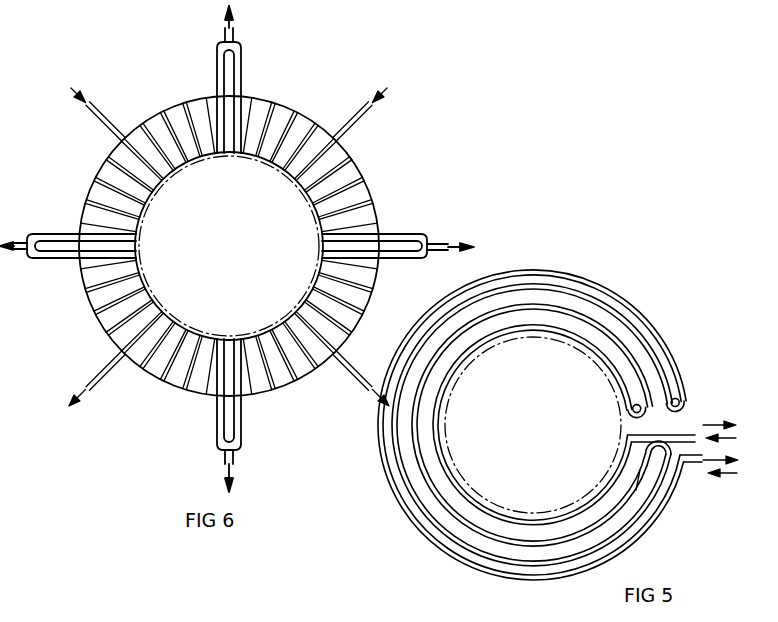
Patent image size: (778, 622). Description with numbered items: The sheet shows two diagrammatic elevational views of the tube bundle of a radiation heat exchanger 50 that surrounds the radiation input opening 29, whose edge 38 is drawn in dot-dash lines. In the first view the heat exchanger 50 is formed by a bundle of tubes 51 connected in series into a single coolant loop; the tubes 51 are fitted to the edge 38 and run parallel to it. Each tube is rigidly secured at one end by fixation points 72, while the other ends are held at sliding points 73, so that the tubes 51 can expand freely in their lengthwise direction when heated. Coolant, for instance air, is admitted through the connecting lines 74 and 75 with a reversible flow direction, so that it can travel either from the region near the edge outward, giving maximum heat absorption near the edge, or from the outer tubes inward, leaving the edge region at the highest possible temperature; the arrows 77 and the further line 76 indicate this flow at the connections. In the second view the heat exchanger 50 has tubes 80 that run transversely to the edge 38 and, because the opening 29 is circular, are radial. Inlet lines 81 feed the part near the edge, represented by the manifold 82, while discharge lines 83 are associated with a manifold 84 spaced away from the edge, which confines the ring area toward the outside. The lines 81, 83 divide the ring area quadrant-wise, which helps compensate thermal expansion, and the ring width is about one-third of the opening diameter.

In FIG. 6, the radiation input opening 29 is at (243, 245).
In FIG. 5, the radiation input opening 29 is at (545, 417).
In FIG. 6, the edge of the radiation input opening 38 is at (197, 340).
In FIG. 5, the edge of the radiation input opening 38 is at (518, 331).
In FIG. 6, the radiation heat exchanger 50 is at (332, 98).
In FIG. 5, the radiation heat exchanger 50 is at (679, 304).
In FIG. 5, the tubes 51 is at (603, 322).
In FIG. 5, the fixation points 72 is at (650, 495).
In FIG. 5, the sliding points 73 is at (631, 405).
In FIG. 5, the connecting line 74 is at (683, 432).
In FIG. 5, the connecting line 75 is at (661, 468).
In FIG. 5, the inlet tube 76 is at (693, 463).
In FIG. 5, the flow direction arrows 77 is at (712, 422).
In FIG. 6, the tubes 80 is at (352, 196).
In FIG. 6, the inlet lines 81 is at (101, 118).
In FIG. 6, the manifold 82 is at (262, 345).
In FIG. 6, the discharge lines 83 is at (242, 56).
In FIG. 6, the manifold 84 is at (298, 383).